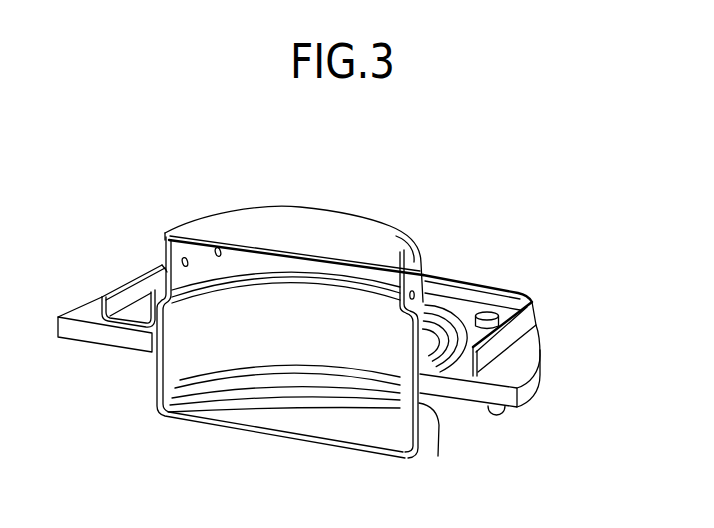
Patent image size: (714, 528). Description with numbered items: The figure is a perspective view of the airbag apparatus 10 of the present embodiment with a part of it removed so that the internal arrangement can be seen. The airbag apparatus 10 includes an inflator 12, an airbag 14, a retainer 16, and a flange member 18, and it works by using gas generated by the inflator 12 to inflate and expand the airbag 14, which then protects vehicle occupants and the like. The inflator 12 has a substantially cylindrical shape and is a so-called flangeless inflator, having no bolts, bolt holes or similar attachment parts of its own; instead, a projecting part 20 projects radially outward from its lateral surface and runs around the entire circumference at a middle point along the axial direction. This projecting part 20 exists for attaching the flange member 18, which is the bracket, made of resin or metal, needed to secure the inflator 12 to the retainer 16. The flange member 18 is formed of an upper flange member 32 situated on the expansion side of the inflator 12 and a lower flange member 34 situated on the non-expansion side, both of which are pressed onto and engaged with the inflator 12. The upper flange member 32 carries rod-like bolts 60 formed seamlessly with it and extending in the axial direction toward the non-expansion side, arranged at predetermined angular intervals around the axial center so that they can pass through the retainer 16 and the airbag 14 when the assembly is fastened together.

The airbag apparatus 10 is at (552, 228).
The inflator 12 is at (347, 230).
The airbag 14 is at (535, 362).
The retainer 16 is at (442, 404).
The flange member 18 is at (530, 296).
The projecting part 20 is at (395, 363).
The upper flange member 32 is at (460, 320).
The lower flange member 34 is at (437, 405).
The bolts 60 is at (507, 415).